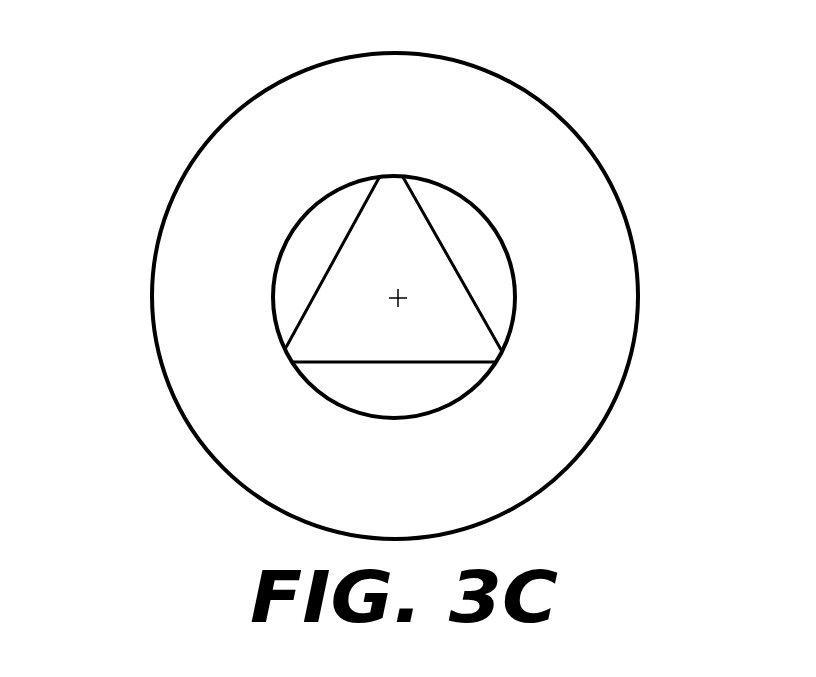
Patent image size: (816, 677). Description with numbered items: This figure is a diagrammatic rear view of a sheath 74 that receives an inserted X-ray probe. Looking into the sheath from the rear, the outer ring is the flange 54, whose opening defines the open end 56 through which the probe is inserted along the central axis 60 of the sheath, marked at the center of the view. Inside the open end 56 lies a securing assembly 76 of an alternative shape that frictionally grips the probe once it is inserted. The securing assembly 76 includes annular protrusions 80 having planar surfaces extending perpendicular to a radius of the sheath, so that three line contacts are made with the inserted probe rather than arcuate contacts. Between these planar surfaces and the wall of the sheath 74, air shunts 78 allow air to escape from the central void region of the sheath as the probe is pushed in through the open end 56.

The sheath 74 is at (96, 71).
The flange 54 is at (583, 243).
The securing assembly 76 is at (503, 213).
The annular protrusions 80 is at (440, 208).
The air shunts 78 is at (390, 176).
The central axis 60 is at (397, 290).
The open end 56 is at (370, 313).